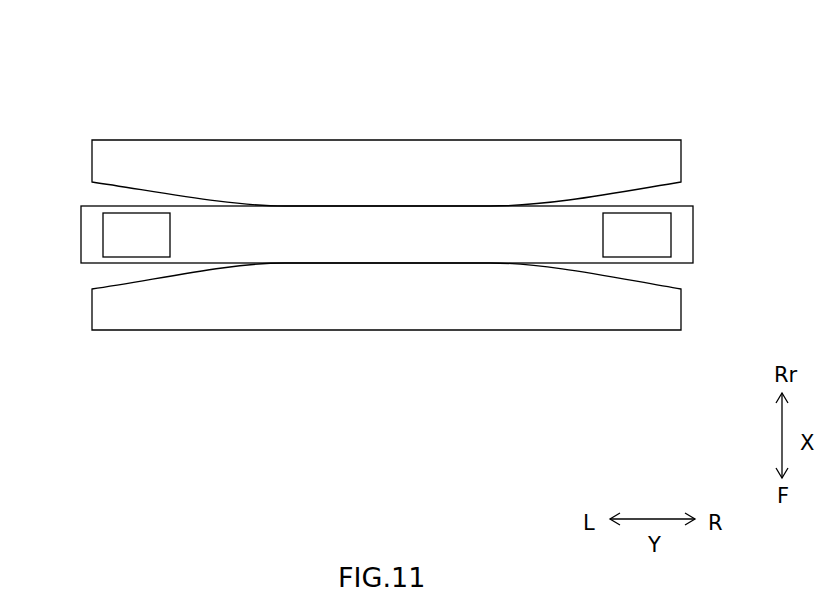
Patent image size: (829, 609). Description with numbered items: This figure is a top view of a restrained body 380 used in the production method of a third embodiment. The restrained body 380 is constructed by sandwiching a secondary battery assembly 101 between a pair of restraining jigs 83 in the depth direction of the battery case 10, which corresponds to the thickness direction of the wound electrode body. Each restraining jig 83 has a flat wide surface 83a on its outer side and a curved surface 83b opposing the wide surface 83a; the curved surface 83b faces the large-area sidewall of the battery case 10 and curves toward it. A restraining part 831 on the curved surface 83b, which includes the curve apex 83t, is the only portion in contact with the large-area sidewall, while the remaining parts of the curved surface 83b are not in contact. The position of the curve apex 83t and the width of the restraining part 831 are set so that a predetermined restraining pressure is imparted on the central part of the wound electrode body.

The restrained body 380 is at (93, 37).
The restraining jig 83 is at (93, 157).
The wide surface 83a is at (132, 330).
The curved surface 83b is at (117, 281).
The curve apex 83t is at (387, 263).
The restraining part 831 is at (488, 263).
The battery case 10 is at (693, 247).
The secondary battery assembly 101 is at (702, 220).